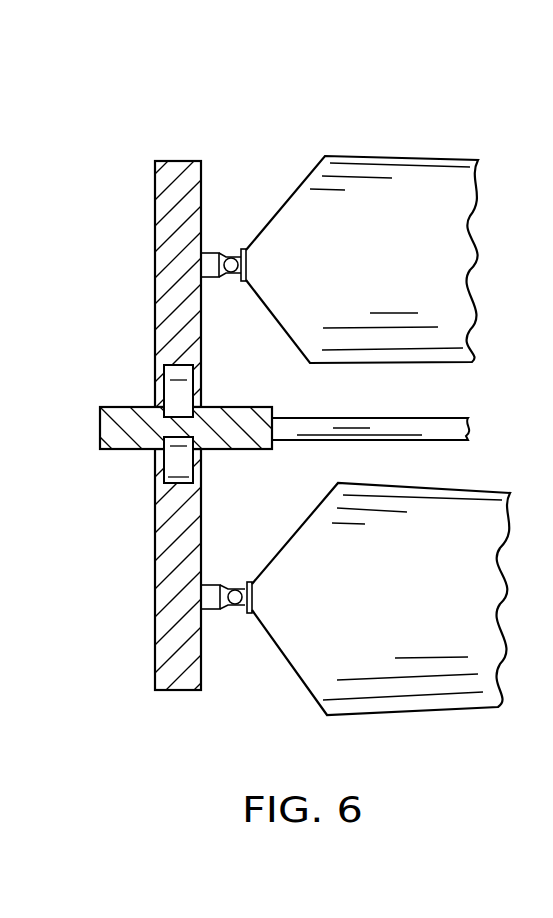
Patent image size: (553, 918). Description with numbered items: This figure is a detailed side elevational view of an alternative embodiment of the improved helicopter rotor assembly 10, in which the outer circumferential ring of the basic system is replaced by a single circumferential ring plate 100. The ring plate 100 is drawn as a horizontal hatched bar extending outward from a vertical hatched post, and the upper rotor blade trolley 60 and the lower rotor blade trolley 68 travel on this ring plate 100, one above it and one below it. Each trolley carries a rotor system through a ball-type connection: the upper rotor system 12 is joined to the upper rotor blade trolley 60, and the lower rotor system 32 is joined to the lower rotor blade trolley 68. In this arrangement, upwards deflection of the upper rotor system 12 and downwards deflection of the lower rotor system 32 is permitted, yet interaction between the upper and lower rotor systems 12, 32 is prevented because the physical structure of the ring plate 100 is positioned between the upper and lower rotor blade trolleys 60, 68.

The improved helicopter rotor assembly 10 is at (250, 176).
The upper rotor system 12 is at (390, 138).
The lower rotor system 32 is at (461, 720).
The upper rotor blade trolley 60 is at (165, 302).
The lower rotor blade trolley 68 is at (166, 605).
The circumferential ring plate 100 is at (105, 449).